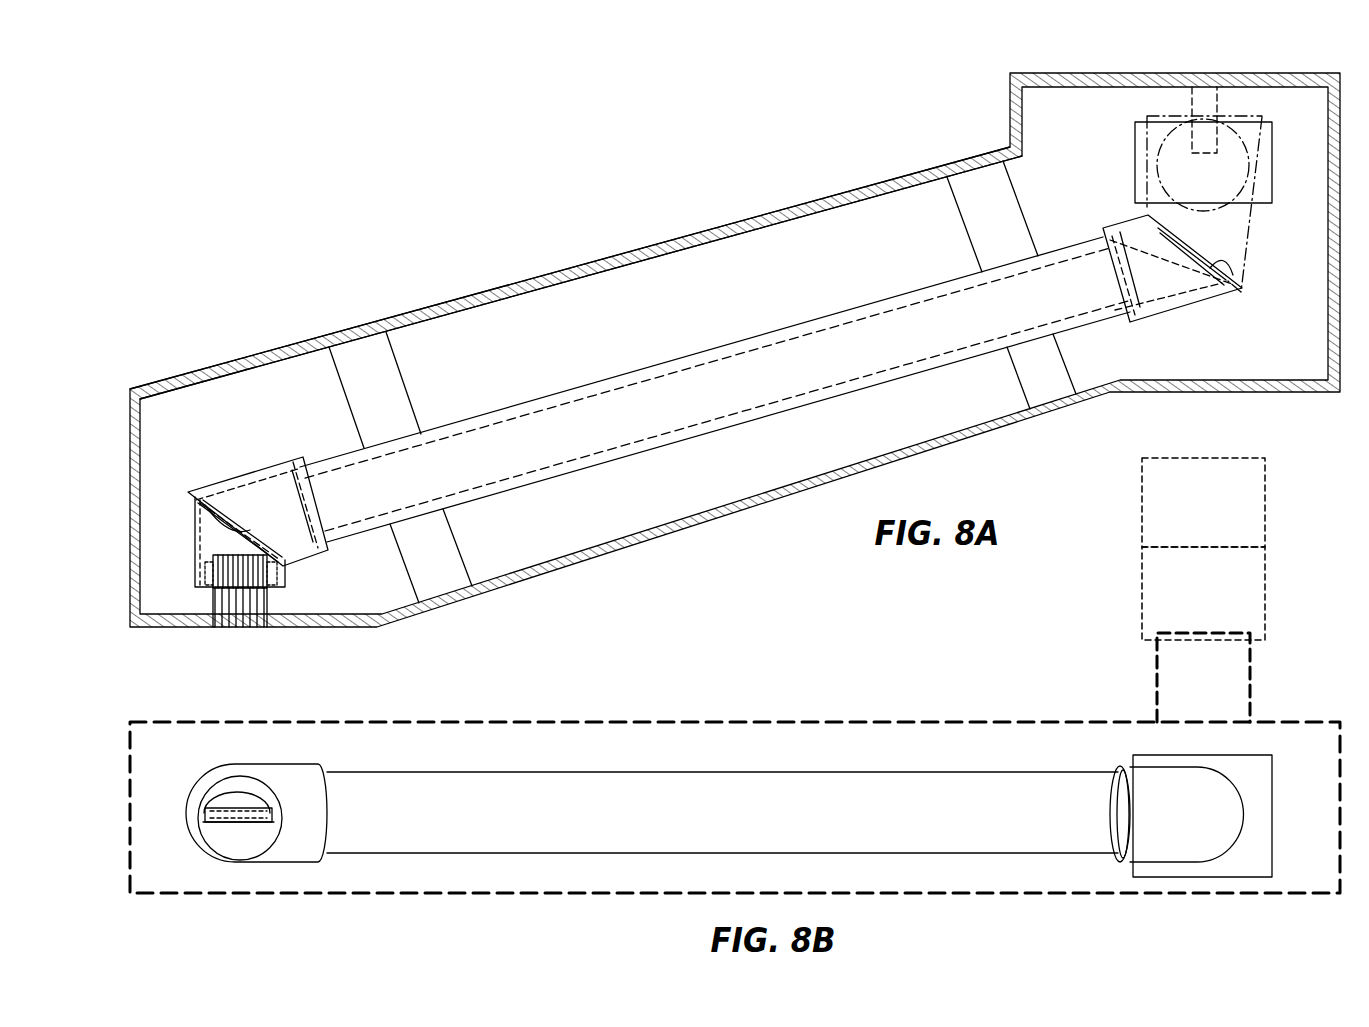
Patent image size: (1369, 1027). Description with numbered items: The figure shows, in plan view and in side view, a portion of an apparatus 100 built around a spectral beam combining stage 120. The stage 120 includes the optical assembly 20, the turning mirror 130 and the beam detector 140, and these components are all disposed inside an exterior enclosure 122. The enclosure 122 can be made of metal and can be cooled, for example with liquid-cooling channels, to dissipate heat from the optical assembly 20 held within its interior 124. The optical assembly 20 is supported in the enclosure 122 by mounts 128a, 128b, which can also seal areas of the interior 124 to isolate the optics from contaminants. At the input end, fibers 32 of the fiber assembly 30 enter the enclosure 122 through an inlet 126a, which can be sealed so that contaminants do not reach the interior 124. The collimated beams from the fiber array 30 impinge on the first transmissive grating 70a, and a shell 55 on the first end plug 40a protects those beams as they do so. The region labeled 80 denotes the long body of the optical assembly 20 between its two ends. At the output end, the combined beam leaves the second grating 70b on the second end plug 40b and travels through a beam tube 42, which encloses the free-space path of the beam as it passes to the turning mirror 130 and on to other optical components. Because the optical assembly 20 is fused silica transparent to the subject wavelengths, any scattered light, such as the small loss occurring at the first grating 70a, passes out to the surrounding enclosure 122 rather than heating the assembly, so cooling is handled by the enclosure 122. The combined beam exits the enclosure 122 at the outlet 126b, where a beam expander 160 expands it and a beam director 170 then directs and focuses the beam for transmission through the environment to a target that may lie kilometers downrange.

In FIG. 8A, the apparatus 100 is at (283, 158).
In FIG. 8B, the apparatus 100 is at (808, 700).
In FIG. 8A, the spectral beam combining stage 120 is at (477, 253).
In FIG. 8A, the exterior enclosure 122 is at (640, 247).
In FIG. 8B, the exterior enclosure 122 is at (470, 722).
In FIG. 8A, the interior 124 is at (795, 215).
In FIG. 8A, the mount 128a is at (336, 350).
In FIG. 8A, the mount 128b is at (956, 186).
In FIG. 8A, the optical assembly 20 is at (758, 425).
In FIG. 8B, the optical assembly 20 is at (640, 765).
In FIG. 8A, the beam path 80 is at (593, 383).
In FIG. 8A, the first end plug 40a is at (243, 475).
In FIG. 8A, the second end plug 40b is at (1143, 322).
In FIG. 8A, the first transmissive grating 70a is at (217, 520).
In FIG. 8A, the second grating 70b is at (1222, 278).
In FIG. 8A, the shell 55 is at (210, 540).
In FIG. 8B, the shell 55 is at (250, 800).
In FIG. 8A, the fiber assembly 30 is at (200, 570).
In FIG. 8A, the fibers 32 is at (211, 630).
In FIG. 8A, the inlet 126a is at (210, 620).
In FIG. 8B, the inlet 126a is at (205, 815).
In FIG. 8A, the outlet 126b is at (1230, 120).
In FIG. 8B, the outlet 126b is at (1157, 700).
In FIG. 8A, the turning mirror 130 is at (1135, 150).
In FIG. 8B, the turning mirror 130 is at (1272, 757).
In FIG. 8A, the beam detector 140 is at (1192, 108).
In FIG. 8A, the beam tube 42 is at (1250, 230).
In FIG. 8A, the beam director 170 is at (1142, 500).
In FIG. 8A, the beam expander 160 is at (1142, 590).